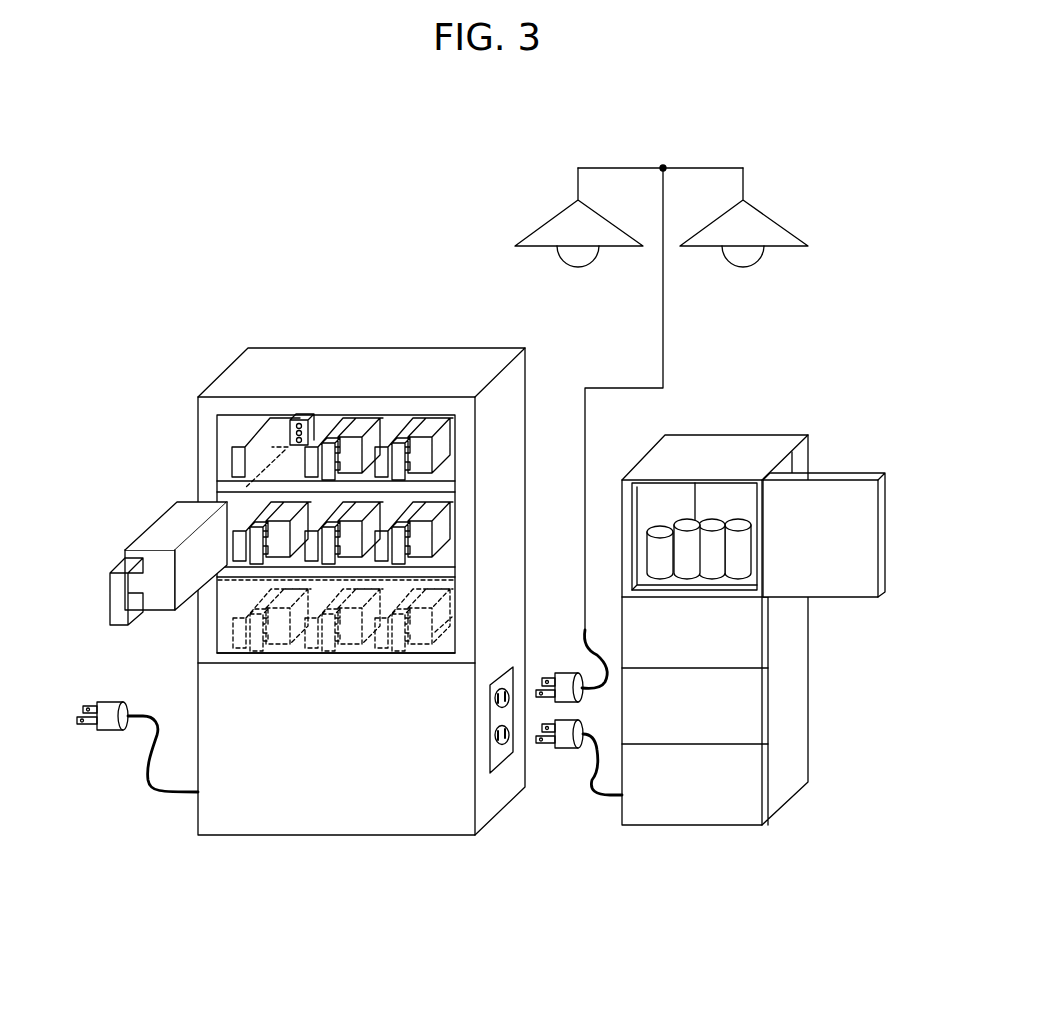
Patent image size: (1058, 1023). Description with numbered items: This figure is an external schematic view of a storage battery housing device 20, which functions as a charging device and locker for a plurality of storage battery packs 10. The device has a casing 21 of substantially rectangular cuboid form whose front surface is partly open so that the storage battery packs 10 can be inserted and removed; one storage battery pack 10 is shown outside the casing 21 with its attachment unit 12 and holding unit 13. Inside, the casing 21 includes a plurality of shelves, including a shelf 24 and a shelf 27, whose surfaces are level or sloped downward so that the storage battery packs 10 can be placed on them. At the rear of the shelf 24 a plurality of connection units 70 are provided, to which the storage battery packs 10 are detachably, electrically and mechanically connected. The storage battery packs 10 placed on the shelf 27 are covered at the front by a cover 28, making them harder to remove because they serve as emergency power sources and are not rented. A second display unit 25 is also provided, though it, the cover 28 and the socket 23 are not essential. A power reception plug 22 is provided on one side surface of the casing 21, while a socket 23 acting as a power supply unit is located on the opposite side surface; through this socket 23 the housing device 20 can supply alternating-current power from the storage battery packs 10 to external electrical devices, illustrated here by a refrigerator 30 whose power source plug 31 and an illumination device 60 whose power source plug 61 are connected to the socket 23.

The storage battery pack 10 is at (160, 527).
The attachment unit 12 is at (232, 572).
The holding unit 13 is at (115, 607).
The storage battery housing device 20 is at (208, 326).
The casing 21 is at (518, 382).
The power reception plug 22 is at (105, 725).
The socket 23 is at (495, 757).
The shelf 24 is at (223, 487).
The second display unit 25 is at (233, 450).
The shelf 27 is at (232, 660).
The cover 28 is at (300, 645).
The refrigerator 30 is at (792, 438).
The power source plug 31 is at (563, 745).
The illumination device 60 is at (760, 222).
The power source plug 61 is at (567, 683).
The connection unit 70 is at (310, 430).